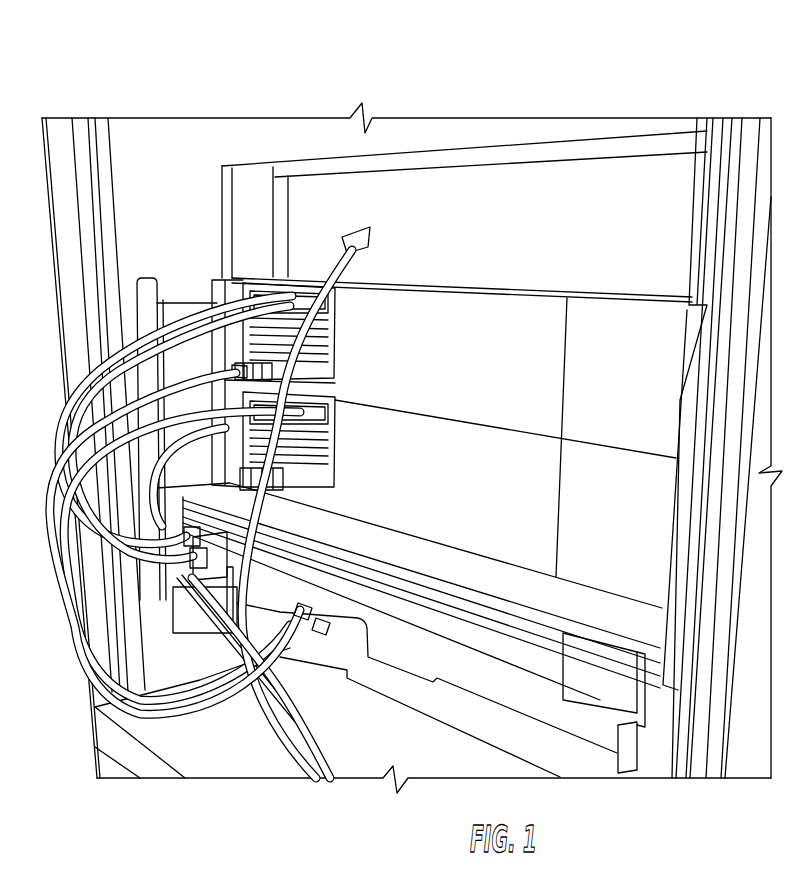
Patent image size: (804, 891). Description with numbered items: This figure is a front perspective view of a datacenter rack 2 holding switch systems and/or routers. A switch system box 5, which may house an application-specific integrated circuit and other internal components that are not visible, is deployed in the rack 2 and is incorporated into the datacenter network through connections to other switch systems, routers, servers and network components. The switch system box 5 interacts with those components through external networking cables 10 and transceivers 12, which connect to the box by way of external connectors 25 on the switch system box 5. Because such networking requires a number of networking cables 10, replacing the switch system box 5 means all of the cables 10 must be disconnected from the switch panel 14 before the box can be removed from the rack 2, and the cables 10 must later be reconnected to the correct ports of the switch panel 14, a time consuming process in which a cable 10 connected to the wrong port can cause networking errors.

The datacenter rack 2 is at (94, 63).
The switch system box 5 is at (285, 589).
The networking cables 10 is at (62, 450).
The transceivers 12 is at (292, 283).
The switch panel 14 is at (356, 339).
The external connectors 25 is at (283, 485).